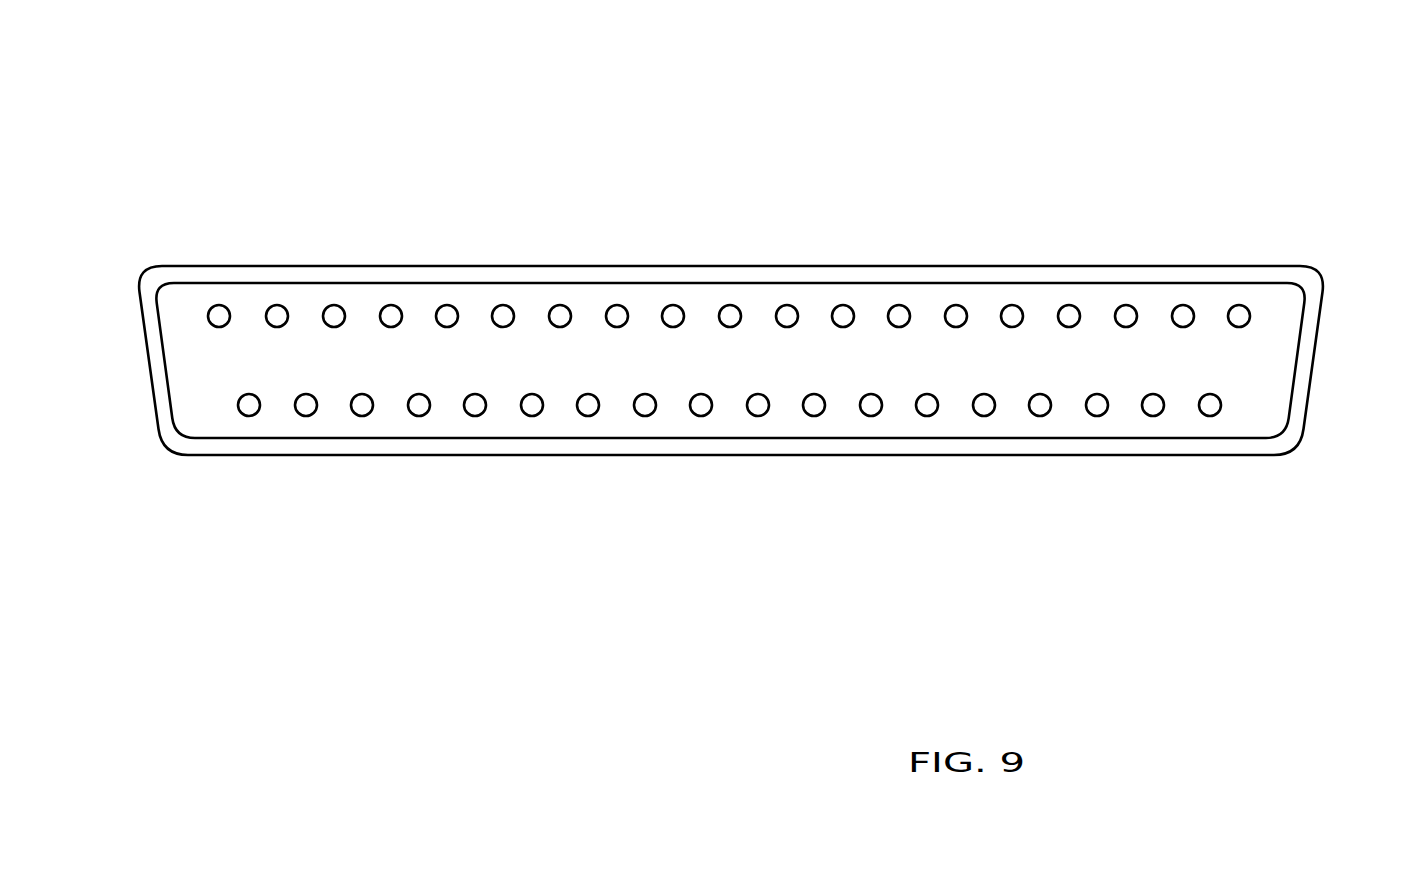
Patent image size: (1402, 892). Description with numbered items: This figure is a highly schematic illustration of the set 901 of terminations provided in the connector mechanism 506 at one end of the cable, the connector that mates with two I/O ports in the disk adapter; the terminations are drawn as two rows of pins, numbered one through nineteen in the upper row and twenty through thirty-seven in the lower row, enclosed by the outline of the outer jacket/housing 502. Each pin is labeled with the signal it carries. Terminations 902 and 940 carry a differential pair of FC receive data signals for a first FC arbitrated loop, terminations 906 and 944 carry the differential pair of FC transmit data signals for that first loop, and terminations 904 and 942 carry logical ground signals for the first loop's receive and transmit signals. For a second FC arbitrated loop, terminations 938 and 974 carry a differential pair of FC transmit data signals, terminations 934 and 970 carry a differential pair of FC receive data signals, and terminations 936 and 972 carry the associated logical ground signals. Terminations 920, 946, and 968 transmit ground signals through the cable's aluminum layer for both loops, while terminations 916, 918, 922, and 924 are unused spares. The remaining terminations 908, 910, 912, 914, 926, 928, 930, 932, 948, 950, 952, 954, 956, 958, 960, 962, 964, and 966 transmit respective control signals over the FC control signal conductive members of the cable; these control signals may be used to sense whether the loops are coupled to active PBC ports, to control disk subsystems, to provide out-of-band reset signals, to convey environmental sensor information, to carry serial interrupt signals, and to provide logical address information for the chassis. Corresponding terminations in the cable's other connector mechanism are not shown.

The set of terminations 901 is at (732, 343).
The outer jacket/housing 502 is at (1308, 391).
The connector mechanism 506 is at (1300, 268).
The termination 902 is at (219, 316).
The termination 904 is at (277, 316).
The termination 906 is at (334, 316).
The termination 908 is at (391, 316).
The termination 910 is at (447, 316).
The termination 912 is at (503, 316).
The termination 914 is at (560, 316).
The termination 916 is at (617, 316).
The termination 918 is at (673, 316).
The termination 920 is at (730, 316).
The termination 922 is at (787, 316).
The termination 924 is at (843, 316).
The termination 926 is at (899, 316).
The termination 928 is at (956, 316).
The termination 930 is at (1012, 316).
The termination 932 is at (1069, 316).
The termination 934 is at (1126, 316).
The termination 936 is at (1183, 316).
The termination 938 is at (1239, 316).
The termination 940 is at (249, 405).
The termination 942 is at (306, 405).
The termination 944 is at (362, 405).
The termination 946 is at (419, 405).
The termination 948 is at (475, 405).
The termination 950 is at (532, 405).
The termination 952 is at (588, 405).
The termination 954 is at (645, 405).
The termination 956 is at (701, 405).
The termination 958 is at (758, 405).
The termination 960 is at (814, 405).
The termination 962 is at (871, 405).
The termination 964 is at (927, 405).
The termination 966 is at (984, 405).
The termination 968 is at (1040, 405).
The termination 970 is at (1097, 405).
The termination 972 is at (1153, 405).
The termination 974 is at (1210, 405).